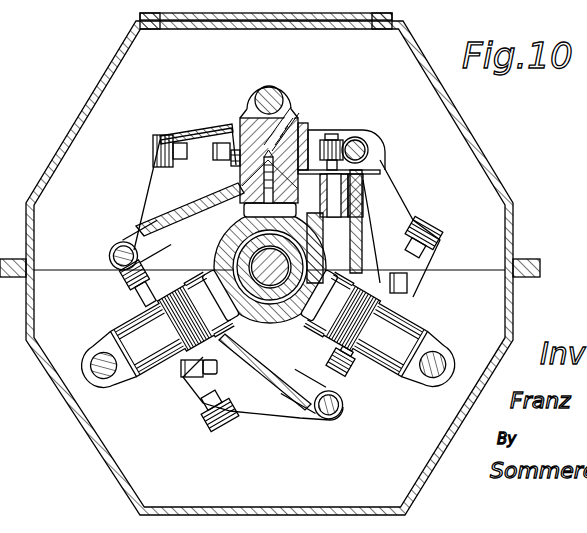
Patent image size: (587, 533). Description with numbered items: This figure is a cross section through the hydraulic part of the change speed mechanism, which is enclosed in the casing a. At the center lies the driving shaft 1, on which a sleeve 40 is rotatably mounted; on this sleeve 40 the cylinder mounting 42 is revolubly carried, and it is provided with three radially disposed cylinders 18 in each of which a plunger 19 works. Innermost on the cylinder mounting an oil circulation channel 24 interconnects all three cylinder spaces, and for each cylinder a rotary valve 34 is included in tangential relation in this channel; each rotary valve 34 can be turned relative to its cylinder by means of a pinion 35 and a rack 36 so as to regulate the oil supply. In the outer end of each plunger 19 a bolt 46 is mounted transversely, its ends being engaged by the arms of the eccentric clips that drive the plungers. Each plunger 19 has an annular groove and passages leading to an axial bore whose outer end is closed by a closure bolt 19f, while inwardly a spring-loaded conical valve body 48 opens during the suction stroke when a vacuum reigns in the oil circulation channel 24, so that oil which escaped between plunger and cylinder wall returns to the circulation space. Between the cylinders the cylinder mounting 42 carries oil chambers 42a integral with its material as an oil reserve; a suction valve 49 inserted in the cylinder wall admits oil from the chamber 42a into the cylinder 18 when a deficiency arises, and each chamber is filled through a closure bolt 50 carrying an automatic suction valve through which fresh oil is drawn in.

The casing a is at (497, 173).
The driving shaft 1 is at (246, 330).
The cylinder 18 is at (312, 132).
The plunger 19 is at (244, 118).
The closure bolt 19f is at (298, 122).
The oil circulation channel 24 is at (213, 238).
The rotary valve 34 is at (186, 218).
The pinion 35 is at (338, 134).
The rack 36 is at (372, 150).
The sleeve 40 is at (290, 247).
The cylinder mounting 42 is at (322, 236).
The oil chamber 42a is at (156, 190).
The bolt 46 is at (269, 96).
The conical valve body 48 is at (229, 170).
The suction valve 49 is at (214, 140).
The closure bolt 50 is at (154, 141).